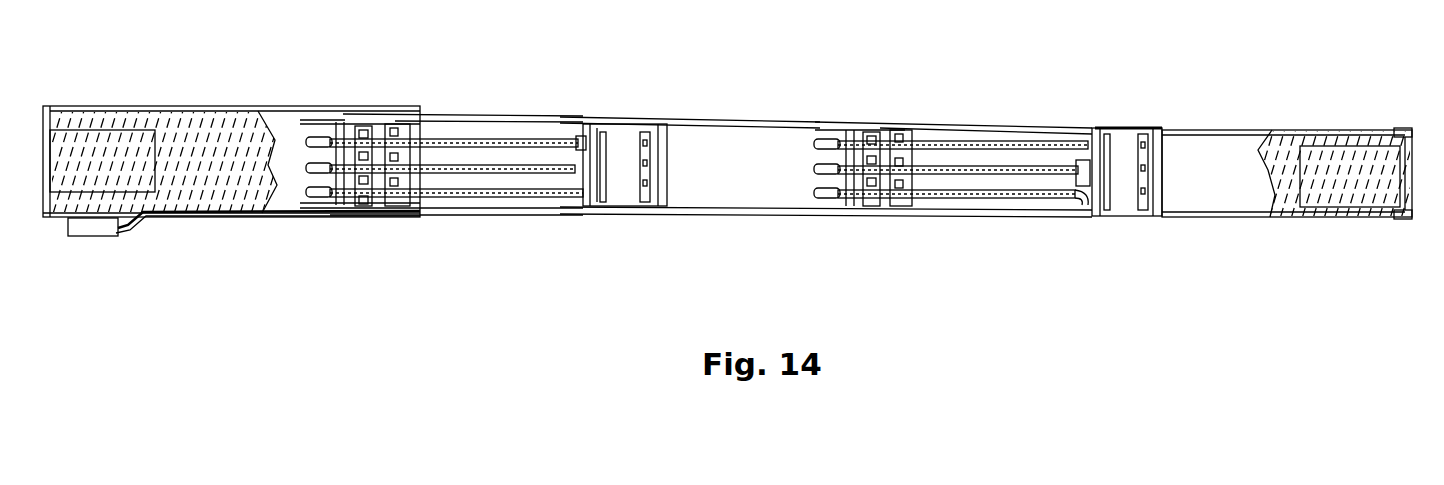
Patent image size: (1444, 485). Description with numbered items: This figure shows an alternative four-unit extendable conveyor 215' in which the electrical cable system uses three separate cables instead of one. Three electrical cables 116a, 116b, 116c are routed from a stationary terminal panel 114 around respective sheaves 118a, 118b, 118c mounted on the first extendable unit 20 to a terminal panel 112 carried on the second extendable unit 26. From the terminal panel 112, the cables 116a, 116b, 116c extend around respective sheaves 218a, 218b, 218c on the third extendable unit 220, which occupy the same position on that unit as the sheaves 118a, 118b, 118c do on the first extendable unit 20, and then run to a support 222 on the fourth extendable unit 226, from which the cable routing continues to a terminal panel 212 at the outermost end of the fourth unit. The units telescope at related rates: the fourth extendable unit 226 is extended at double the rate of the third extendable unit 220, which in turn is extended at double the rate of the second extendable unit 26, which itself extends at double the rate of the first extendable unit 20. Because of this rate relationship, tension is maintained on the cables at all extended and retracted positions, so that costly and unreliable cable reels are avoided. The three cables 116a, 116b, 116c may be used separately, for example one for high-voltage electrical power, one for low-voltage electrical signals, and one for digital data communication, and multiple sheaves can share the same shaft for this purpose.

The first extendable unit 20 is at (213, 107).
The second extendable unit 26 is at (502, 113).
The terminal panel 112 is at (584, 116).
The stationary terminal panel 114 is at (98, 238).
The electrical cable 116a is at (478, 198).
The electrical cable 116b is at (458, 176).
The electrical cable 116c is at (520, 138).
The sheave 118a is at (308, 200).
The sheave 118b is at (327, 174).
The sheave 118c is at (330, 140).
The terminal panel 212 is at (1403, 130).
The alternative four-unit extendable conveyor 215' is at (826, 127).
The sheave 218a is at (832, 198).
The sheave 218b is at (812, 172).
The sheave 218c is at (832, 140).
The third extendable unit 220 is at (890, 126).
The support 222 is at (1068, 138).
The fourth extendable unit 226 is at (1193, 128).